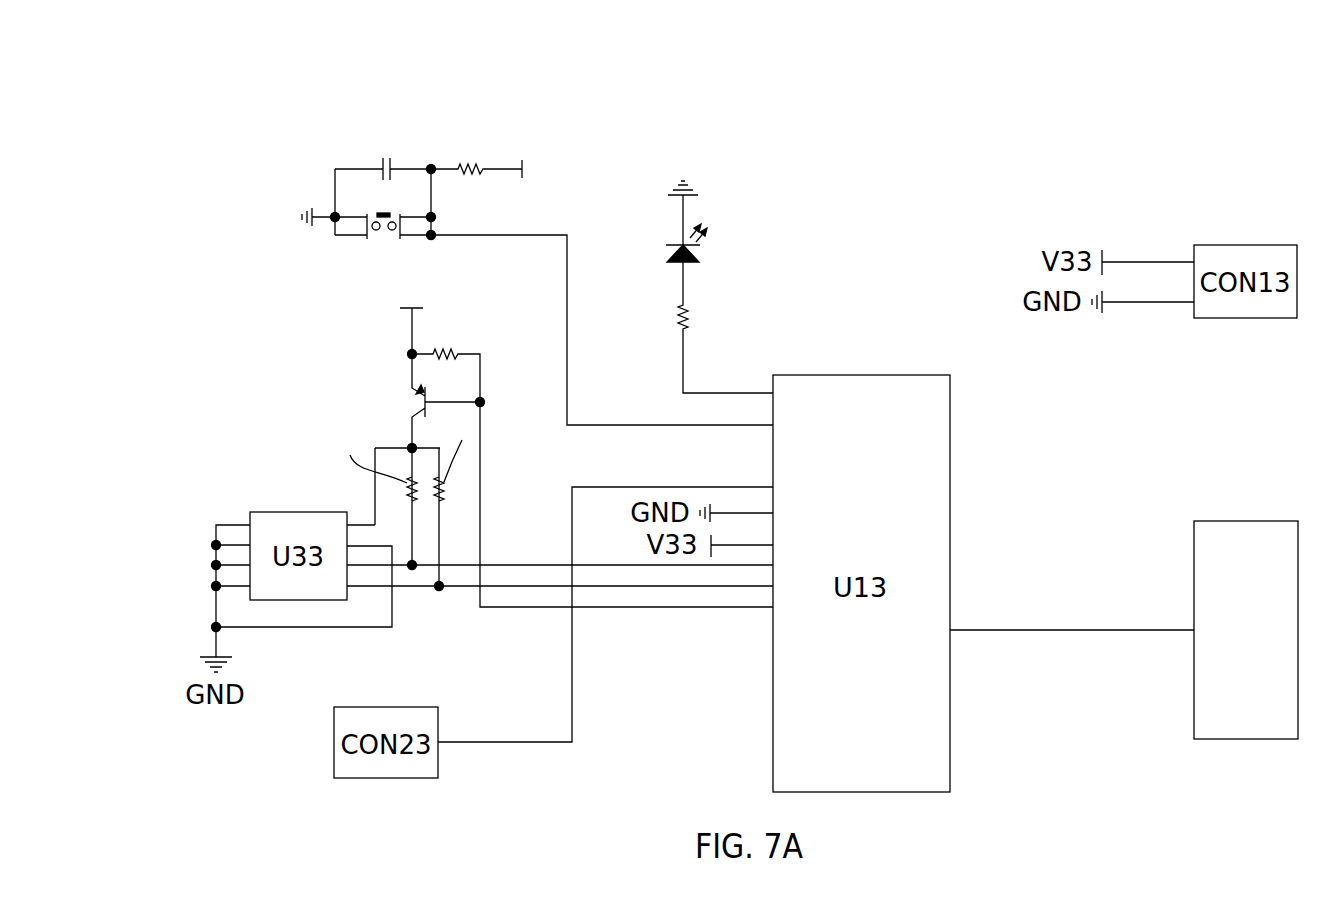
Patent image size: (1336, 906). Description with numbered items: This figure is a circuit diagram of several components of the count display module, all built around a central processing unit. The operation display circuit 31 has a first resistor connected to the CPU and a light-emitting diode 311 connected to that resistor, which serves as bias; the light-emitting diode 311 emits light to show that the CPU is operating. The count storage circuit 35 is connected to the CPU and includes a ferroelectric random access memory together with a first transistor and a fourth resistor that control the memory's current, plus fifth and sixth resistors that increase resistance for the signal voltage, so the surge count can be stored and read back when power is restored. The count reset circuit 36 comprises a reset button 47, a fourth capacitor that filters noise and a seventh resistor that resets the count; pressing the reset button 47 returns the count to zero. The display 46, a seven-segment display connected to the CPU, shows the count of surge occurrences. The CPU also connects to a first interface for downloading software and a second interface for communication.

The count reset circuit 36 is at (429, 114).
The reset button 47 is at (382, 243).
The count storage circuit 35 is at (321, 392).
The operation display circuit 31 is at (797, 242).
The light-emitting diode 311 is at (719, 245).
The display 46 is at (1124, 630).